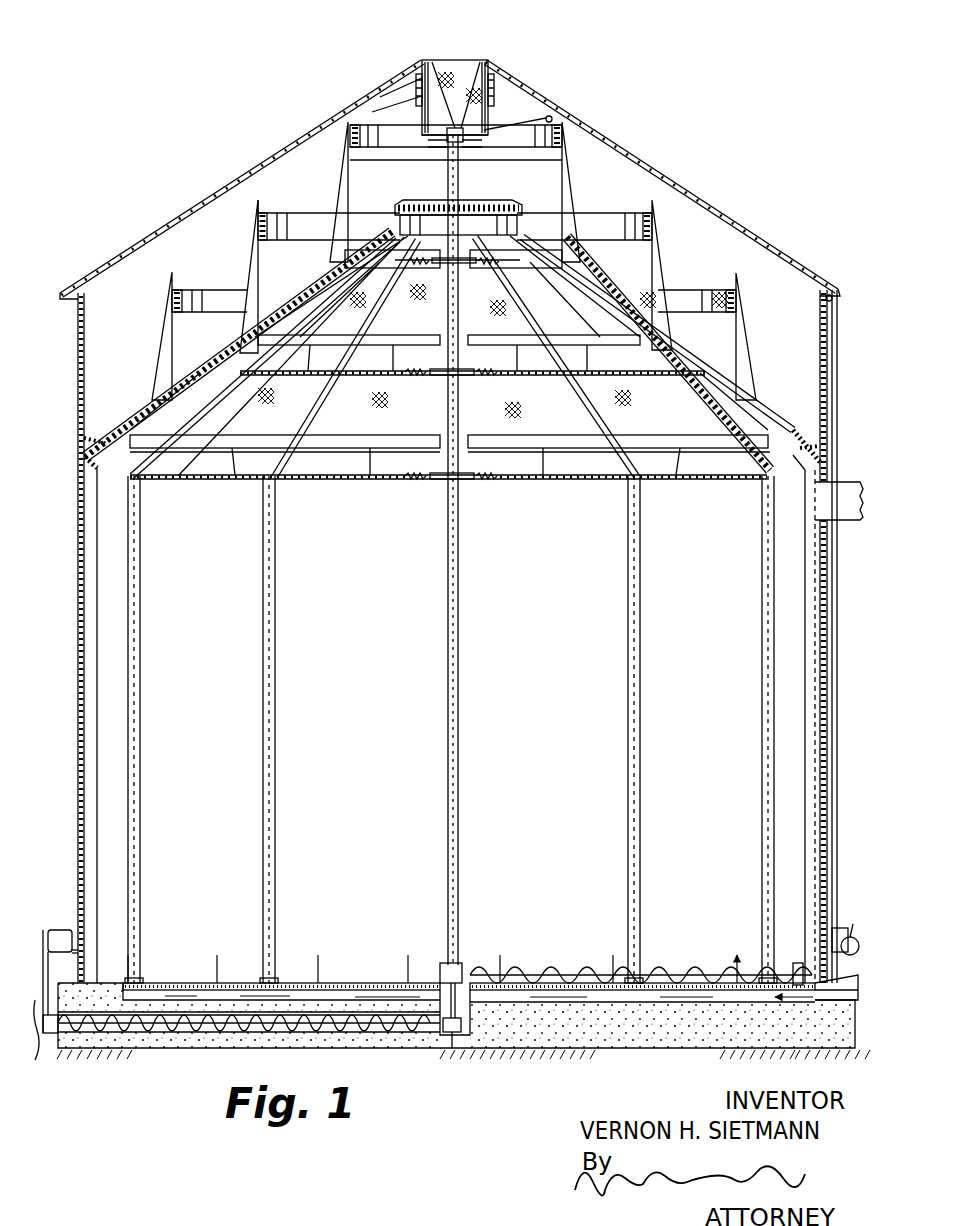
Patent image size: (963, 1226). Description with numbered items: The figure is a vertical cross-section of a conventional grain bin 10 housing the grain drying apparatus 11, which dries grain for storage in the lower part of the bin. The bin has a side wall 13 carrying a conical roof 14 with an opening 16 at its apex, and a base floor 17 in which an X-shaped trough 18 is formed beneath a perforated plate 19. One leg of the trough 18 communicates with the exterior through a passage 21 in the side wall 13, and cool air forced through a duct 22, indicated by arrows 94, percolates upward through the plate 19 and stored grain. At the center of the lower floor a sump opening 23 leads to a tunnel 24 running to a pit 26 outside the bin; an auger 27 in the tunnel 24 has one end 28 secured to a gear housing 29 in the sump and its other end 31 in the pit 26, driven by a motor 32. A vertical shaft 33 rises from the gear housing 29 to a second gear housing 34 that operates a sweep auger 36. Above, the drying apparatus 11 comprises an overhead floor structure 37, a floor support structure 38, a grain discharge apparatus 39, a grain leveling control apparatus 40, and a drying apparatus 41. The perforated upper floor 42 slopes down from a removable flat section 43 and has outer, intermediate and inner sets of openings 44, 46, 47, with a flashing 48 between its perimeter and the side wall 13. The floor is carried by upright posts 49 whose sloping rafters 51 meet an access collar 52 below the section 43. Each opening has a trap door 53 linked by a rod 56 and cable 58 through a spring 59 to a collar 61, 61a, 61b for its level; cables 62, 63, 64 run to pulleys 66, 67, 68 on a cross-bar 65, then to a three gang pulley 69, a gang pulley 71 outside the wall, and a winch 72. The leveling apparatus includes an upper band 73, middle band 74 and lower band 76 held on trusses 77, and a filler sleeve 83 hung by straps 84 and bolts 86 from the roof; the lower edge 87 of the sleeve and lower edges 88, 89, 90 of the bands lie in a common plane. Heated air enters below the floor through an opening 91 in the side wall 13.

The grain bin 10 is at (695, 70).
The grain drying apparatus 11 is at (590, 160).
The side wall 13 is at (77, 606).
The roof 14 is at (248, 172).
The opening 16 is at (462, 60).
The base floor 17 is at (630, 1040).
The trough 18 is at (298, 983).
The perforated plate 19 is at (347, 984).
The passage 21 is at (822, 990).
The duct 22 is at (842, 977).
The sump opening 23 is at (440, 993).
The tunnel 24 is at (174, 1033).
The pit 26 is at (55, 1075).
The auger 27 is at (220, 1033).
The end of auger 28 is at (442, 1025).
The gear housing 29 is at (451, 1035).
The other end of auger 31 is at (52, 1037).
The motor 32 is at (62, 928).
The shaft 33 is at (455, 998).
The second gear housing 34 is at (457, 968).
The sweep auger 36 is at (560, 968).
The overhead floor structure 37 is at (770, 388).
The floor support structure 38 is at (752, 490).
The grain discharge apparatus 39 is at (478, 483).
The grain leveling control apparatus 40 is at (200, 237).
The drying apparatus 41 is at (800, 540).
The upper floor 42 is at (152, 393).
The flat section 43 is at (412, 208).
The outer set of openings 44 is at (112, 442).
The intermediate set of openings 46 is at (670, 345).
The inner set of openings 47 is at (540, 213).
The flashing 48 is at (88, 436).
The upright posts 49 is at (143, 630).
The sloping rafters 51 is at (326, 398).
The access collar 52 is at (490, 215).
The trap door 53 is at (420, 270).
The rod 56 is at (306, 366).
The cable 58 is at (388, 264).
The spring 59 is at (400, 377).
The collar 61 is at (437, 483).
The intermediate collar 61a is at (468, 378).
The upper collar 61b is at (470, 264).
The cable 62 is at (460, 192).
The cable 63 is at (448, 320).
The cable 64 is at (449, 195).
The cross-bar 65 is at (440, 143).
The pulley 66 is at (465, 128).
The pulley 67 is at (455, 126).
The pulley 68 is at (432, 64).
The three gang pulley 69 is at (551, 116).
The gang pulley 71 is at (840, 295).
The winch 72 is at (842, 928).
The upper band 73 is at (350, 128).
The middle band 74 is at (285, 215).
The lower band 76 is at (178, 290).
The trusses 77 is at (343, 150).
The filler sleeve 83 is at (478, 70).
The straps 84 is at (405, 78).
The bolts 86 is at (410, 97).
The lower edge of filler sleeve 87 is at (470, 143).
The lower edge of upper band 88 is at (370, 213).
The lower edge of middle band 89 is at (305, 241).
The lower edge of lower band 90 is at (167, 346).
The opening 91 is at (829, 500).
The arrows 94 is at (690, 1000).